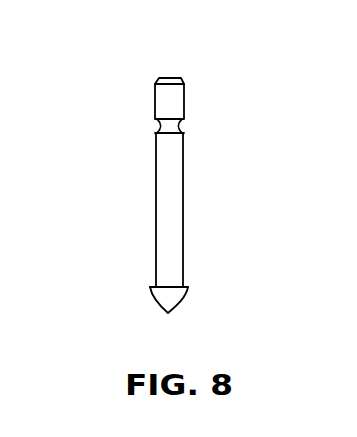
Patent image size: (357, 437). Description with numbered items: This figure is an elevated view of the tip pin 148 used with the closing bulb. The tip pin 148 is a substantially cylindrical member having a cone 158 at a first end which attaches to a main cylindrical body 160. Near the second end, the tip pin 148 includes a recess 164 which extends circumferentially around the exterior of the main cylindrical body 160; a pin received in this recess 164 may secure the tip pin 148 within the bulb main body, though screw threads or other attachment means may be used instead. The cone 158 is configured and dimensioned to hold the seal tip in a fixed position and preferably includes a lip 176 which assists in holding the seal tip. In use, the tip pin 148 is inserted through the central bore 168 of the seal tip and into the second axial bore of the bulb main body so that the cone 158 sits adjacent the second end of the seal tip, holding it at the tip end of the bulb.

The tip pin 148 is at (250, 204).
The central bore 168 is at (178, 80).
The recess 164 is at (182, 125).
The main cylindrical body 160 is at (169, 201).
The lip 176 is at (153, 287).
The cone 158 is at (168, 302).